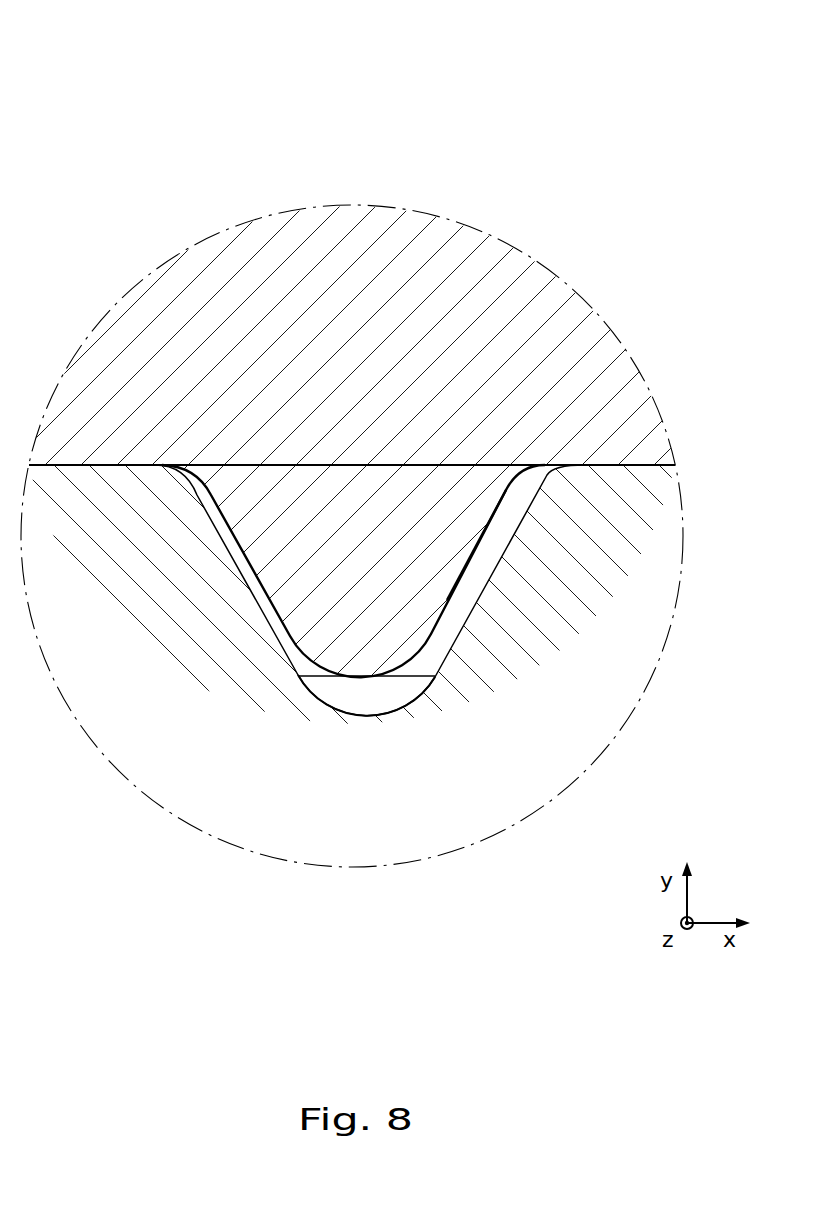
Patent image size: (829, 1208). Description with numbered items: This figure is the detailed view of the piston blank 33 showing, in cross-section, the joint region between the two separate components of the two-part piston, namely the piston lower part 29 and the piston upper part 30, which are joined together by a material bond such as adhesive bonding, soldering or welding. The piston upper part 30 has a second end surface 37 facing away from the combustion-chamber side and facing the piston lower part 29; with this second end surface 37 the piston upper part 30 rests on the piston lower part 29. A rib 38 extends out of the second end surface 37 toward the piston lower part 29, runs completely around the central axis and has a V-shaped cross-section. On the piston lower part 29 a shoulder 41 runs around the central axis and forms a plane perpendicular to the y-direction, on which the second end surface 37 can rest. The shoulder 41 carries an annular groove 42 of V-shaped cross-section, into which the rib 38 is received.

The piston lower part 29 is at (217, 855).
The piston upper part 30 is at (495, 222).
The piston blank 33 is at (362, 88).
The second end surface 37 is at (100, 465).
The rib 38 is at (447, 600).
The shoulder 41 is at (641, 465).
The groove 42 is at (351, 716).